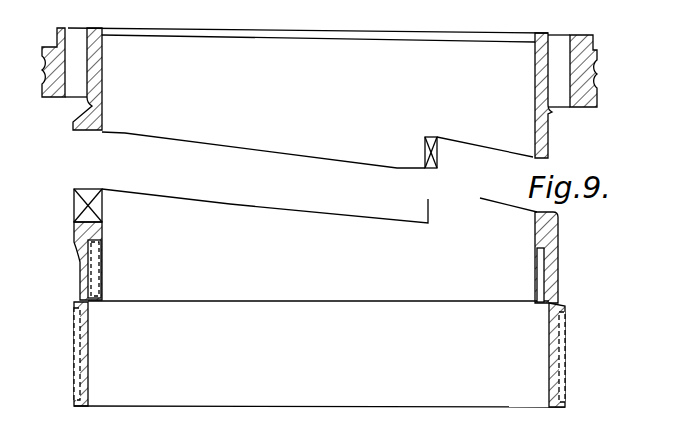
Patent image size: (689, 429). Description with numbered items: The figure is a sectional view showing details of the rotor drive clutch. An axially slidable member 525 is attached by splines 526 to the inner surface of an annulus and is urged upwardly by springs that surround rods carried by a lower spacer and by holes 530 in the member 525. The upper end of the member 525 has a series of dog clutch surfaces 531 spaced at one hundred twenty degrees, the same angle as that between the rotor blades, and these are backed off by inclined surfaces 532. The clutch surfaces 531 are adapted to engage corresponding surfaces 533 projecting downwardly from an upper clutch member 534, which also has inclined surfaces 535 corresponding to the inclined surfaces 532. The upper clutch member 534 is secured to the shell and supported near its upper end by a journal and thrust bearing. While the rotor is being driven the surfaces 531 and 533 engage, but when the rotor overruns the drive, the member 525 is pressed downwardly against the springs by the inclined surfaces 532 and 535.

The upper clutch member 534 is at (319, 93).
The inclined surfaces 535 is at (265, 150).
The corresponding surfaces 533 is at (425, 145).
The inclined surfaces 532 is at (312, 213).
The dog clutch surfaces 531 is at (93, 202).
The axially slidable member 525 is at (99, 229).
The splines 526 is at (78, 332).
The holes 530 is at (541, 266).